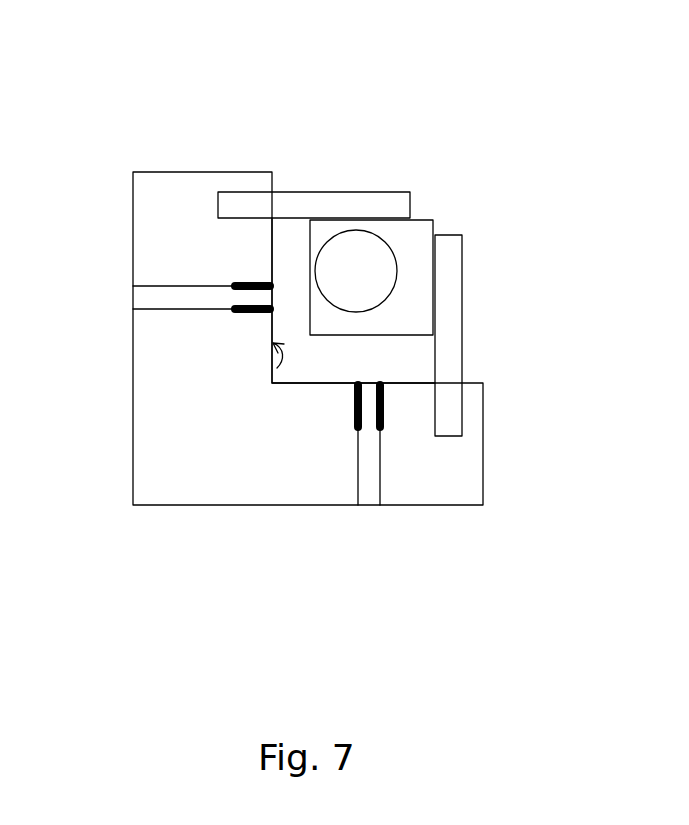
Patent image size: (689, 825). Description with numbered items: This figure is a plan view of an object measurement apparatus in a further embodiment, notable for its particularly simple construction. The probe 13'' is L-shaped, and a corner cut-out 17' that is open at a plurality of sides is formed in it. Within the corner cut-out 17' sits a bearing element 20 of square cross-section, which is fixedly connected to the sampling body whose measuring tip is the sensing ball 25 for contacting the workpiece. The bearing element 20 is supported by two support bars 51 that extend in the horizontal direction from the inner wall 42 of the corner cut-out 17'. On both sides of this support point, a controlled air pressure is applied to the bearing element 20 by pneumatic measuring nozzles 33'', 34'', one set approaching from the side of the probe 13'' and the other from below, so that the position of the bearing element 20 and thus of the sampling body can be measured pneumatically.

The L-shaped probe 13'' is at (308, 384).
The corner cut-out 17' is at (296, 199).
The support bars 51 is at (333, 200).
The bearing element 20 is at (403, 312).
The sensing ball 25 is at (357, 265).
The pneumatic measuring nozzle 33'' is at (163, 214).
The pneumatic measuring nozzle 34'' is at (396, 508).
The inner wall 42 is at (277, 368).